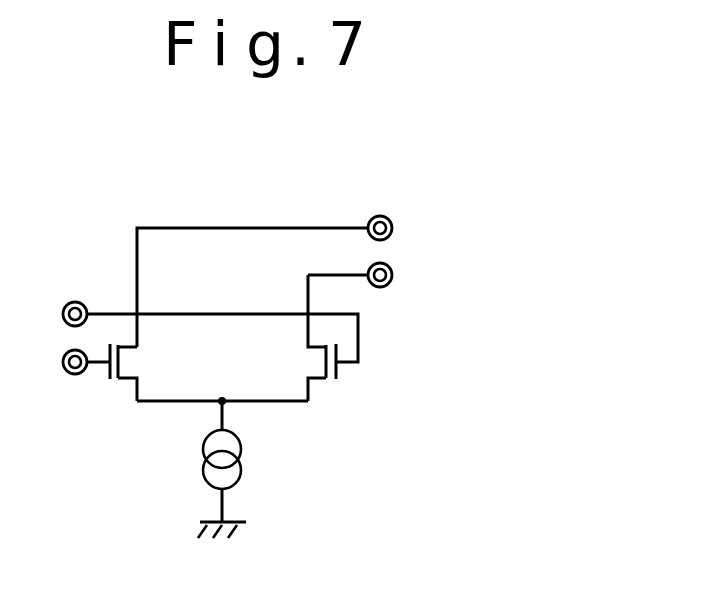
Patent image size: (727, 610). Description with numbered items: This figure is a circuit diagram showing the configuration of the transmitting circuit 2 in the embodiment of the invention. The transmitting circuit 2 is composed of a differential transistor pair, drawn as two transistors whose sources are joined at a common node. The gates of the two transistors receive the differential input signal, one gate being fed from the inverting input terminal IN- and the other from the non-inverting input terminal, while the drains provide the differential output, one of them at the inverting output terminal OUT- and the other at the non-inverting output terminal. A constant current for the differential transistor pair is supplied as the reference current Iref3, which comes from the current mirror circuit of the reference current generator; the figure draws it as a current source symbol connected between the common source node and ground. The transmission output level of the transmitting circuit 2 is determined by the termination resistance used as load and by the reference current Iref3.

The transmitting circuit 2 is at (72, 210).
The reference current Iref3 is at (257, 459).
The inverting input terminal IN- is at (53, 358).
The inverting output terminal OUT- is at (409, 271).